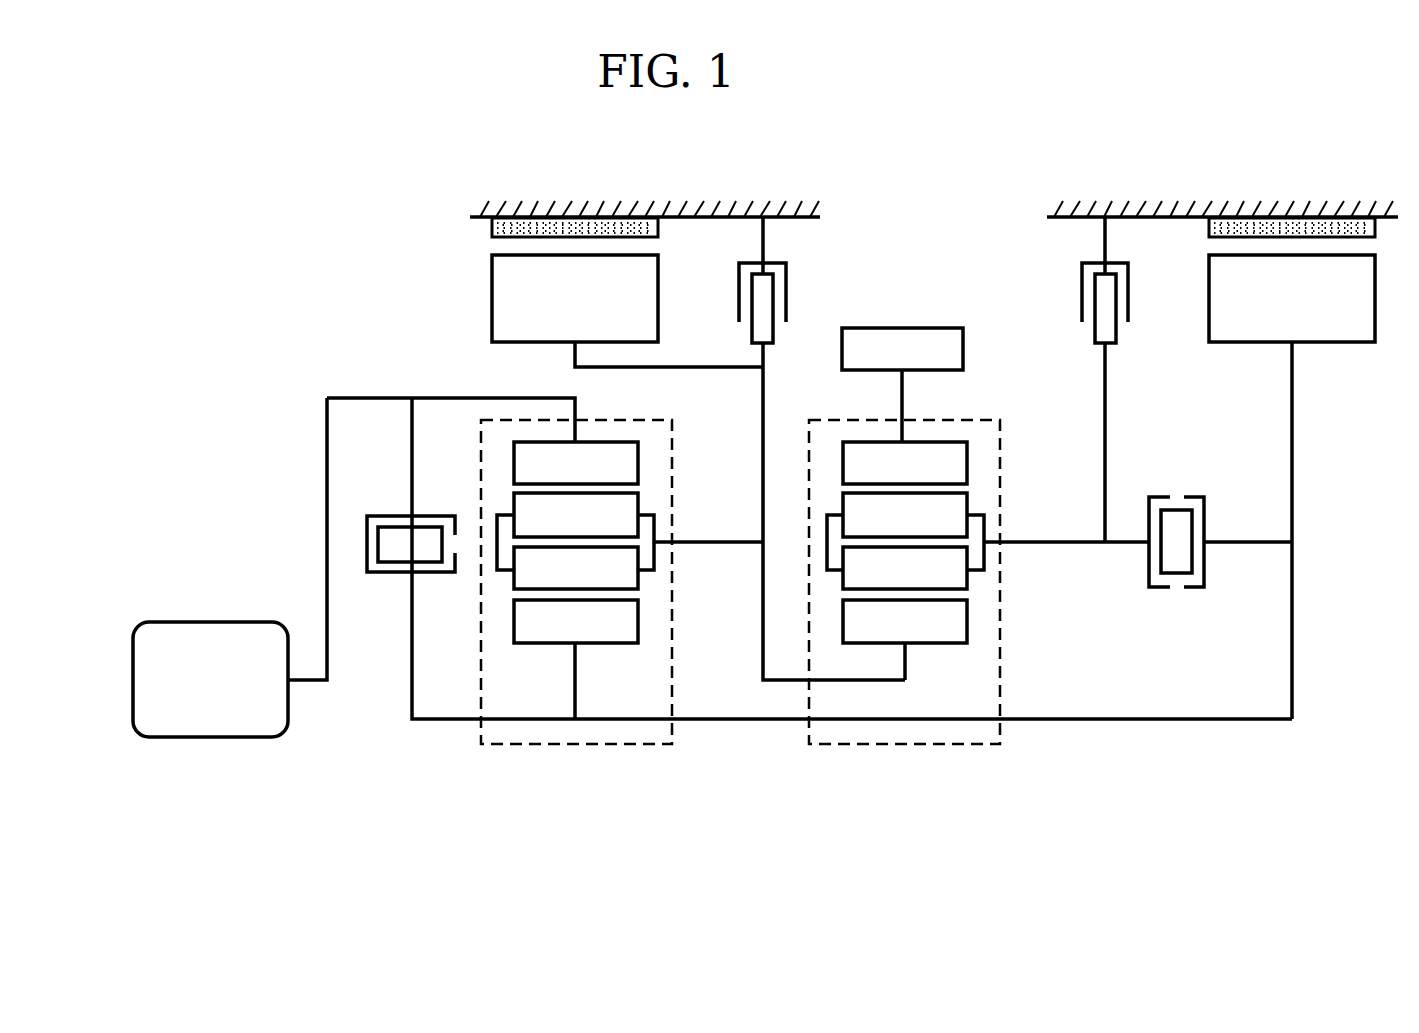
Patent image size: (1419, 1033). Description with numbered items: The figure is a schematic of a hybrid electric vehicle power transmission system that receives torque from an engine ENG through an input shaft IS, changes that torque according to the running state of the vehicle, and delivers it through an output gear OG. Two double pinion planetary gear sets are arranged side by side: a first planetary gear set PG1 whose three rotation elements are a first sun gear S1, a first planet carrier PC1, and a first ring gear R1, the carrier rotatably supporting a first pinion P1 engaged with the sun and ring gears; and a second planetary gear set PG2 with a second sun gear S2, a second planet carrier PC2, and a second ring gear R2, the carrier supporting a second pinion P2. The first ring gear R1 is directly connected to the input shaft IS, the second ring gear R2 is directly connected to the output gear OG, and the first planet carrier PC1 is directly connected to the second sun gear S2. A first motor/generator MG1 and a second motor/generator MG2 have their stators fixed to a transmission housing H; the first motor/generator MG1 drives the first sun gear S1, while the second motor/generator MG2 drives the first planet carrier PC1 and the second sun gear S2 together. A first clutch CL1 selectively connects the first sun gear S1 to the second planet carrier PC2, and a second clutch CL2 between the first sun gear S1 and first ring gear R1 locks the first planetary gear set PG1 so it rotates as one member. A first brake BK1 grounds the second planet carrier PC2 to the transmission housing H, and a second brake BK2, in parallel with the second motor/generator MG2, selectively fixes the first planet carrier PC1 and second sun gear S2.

The transmission housing H is at (934, 172).
The first motor/generator MG1 is at (1292, 468).
The second motor/generator MG2 is at (627, 292).
The first brake BK1 is at (1079, 379).
The second brake BK2 is at (822, 448).
The output gear OG is at (902, 384).
The first planetary gear set PG1 is at (622, 645).
The second planetary gear set PG2 is at (979, 645).
The first ring gear R1 is at (576, 462).
The first pinion P1 is at (617, 512).
The first sun gear S1 is at (576, 659).
The first planet carrier PC1 is at (630, 560).
The second ring gear R2 is at (905, 462).
The second pinion P2 is at (946, 512).
The second sun gear S2 is at (905, 640).
The second planet carrier PC2 is at (988, 579).
The first clutch CL1 is at (1220, 566).
The second clutch CL2 is at (404, 567).
The engine ENG is at (210, 679).
The input shaft IS is at (307, 583).